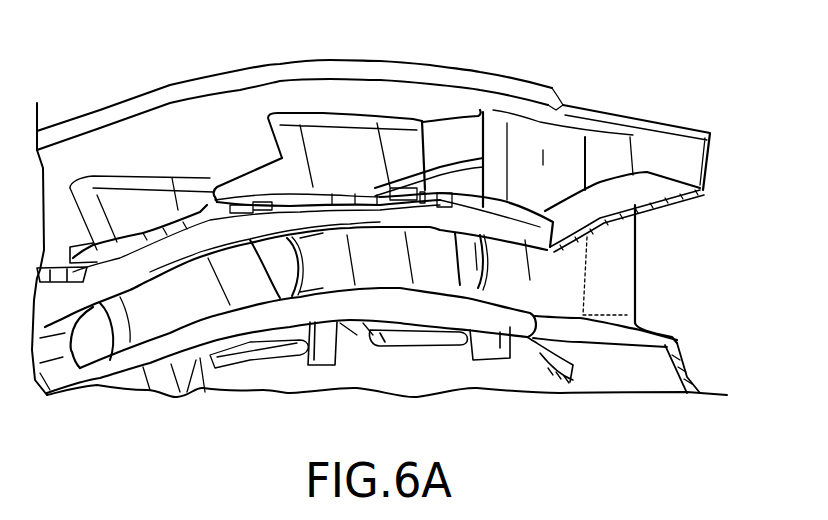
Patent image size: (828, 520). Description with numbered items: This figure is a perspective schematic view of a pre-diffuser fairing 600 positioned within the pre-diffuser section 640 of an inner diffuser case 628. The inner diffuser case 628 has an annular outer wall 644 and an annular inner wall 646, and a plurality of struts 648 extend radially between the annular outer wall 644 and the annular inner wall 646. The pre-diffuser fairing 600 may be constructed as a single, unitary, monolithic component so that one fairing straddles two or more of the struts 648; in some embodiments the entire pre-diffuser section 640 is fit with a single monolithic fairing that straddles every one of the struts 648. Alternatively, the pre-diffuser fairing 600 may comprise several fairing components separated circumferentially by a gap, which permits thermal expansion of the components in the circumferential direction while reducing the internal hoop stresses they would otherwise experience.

The pre-diffuser fairing 600 is at (361, 299).
The inner diffuser case 628 is at (162, 83).
The pre-diffuser section 640 is at (663, 298).
The annular outer wall 644 is at (620, 121).
The annular inner wall 646 is at (687, 383).
The plurality of struts 648 is at (320, 153).